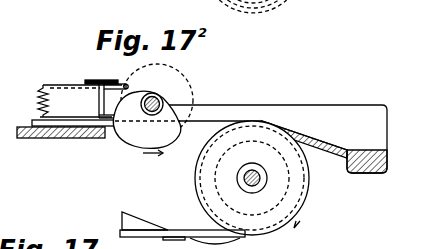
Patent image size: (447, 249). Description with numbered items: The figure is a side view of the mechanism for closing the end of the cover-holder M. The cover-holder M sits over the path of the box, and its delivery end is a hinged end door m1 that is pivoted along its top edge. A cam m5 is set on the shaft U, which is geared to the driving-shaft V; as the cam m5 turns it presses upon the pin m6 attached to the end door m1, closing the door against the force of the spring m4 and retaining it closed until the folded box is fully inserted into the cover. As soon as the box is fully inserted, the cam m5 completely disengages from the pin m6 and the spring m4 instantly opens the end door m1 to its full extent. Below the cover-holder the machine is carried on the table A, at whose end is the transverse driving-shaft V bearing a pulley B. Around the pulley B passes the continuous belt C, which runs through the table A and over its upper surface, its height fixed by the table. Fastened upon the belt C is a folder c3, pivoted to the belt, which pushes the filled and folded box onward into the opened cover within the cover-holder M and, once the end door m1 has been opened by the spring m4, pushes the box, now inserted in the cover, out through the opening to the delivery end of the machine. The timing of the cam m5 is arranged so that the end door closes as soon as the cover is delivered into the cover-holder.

The cover-holder M is at (40, 93).
The spring m4 is at (100, 80).
The pin m6 is at (123, 83).
The hinged end door m1 is at (118, 90).
The shaft U is at (157, 99).
The cam m5 is at (168, 129).
The driving-shaft V is at (252, 170).
The pulley B is at (264, 180).
The table A is at (33, 138).
The belt C is at (88, 126).
The folder c3 is at (145, 220).